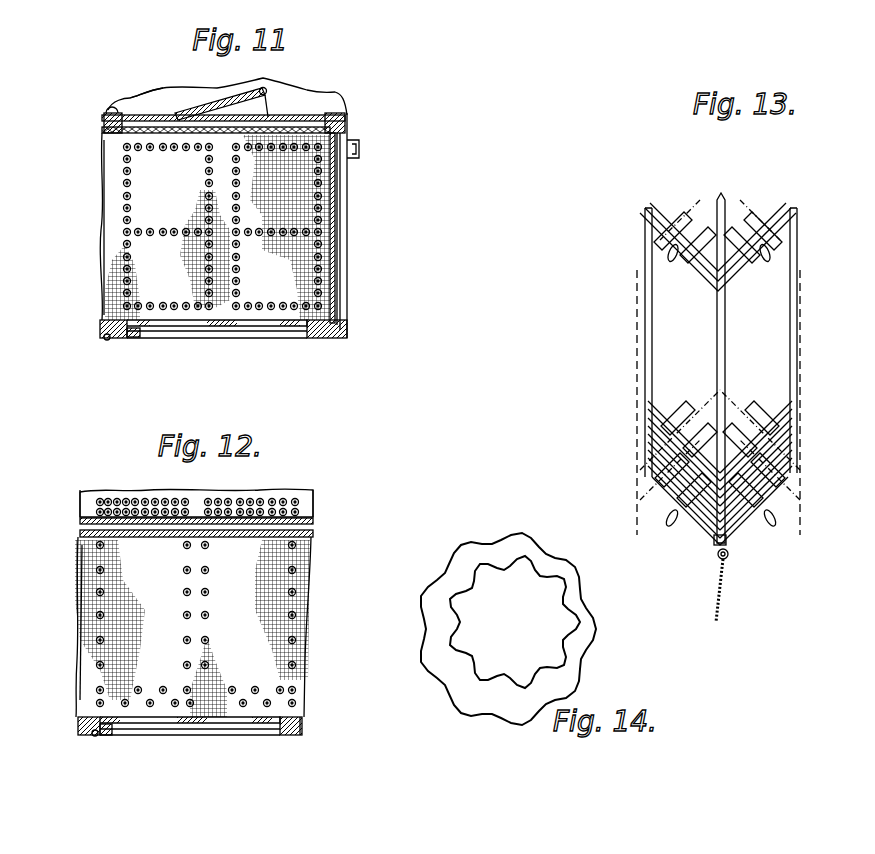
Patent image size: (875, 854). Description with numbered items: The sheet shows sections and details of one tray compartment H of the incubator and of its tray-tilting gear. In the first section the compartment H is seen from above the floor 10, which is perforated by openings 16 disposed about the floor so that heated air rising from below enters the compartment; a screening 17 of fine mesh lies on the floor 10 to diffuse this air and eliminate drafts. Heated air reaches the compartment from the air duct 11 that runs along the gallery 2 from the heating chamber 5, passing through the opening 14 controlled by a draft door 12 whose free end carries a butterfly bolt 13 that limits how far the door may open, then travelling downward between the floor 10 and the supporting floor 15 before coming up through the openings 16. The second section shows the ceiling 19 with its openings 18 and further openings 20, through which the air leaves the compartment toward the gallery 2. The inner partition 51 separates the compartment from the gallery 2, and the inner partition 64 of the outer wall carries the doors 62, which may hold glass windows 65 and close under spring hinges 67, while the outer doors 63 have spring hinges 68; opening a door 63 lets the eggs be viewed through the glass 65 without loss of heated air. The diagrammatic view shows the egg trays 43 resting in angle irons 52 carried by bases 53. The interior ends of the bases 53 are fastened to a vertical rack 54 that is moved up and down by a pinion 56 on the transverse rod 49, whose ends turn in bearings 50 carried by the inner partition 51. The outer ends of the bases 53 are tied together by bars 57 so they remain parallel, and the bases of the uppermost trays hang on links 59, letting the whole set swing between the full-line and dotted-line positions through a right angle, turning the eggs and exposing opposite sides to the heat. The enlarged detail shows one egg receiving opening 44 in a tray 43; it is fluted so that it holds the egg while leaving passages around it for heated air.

In FIG. 12, the gallery 2 is at (313, 504).
In FIG. 11, the heating chamber 5 is at (359, 146).
In FIG. 11, the floor 10 is at (318, 100).
In FIG. 11, the air duct 11 is at (140, 100).
In FIG. 11, the draft door 12 is at (247, 88).
In FIG. 11, the butterfly bolt 13 is at (270, 100).
In FIG. 11, the opening 14 is at (212, 113).
In FIG. 11, the supporting floor 15 is at (104, 124).
In FIG. 11, the openings in the floor 16 is at (123, 181).
In FIG. 11, the screening 17 is at (342, 199).
In FIG. 12, the openings in the ceiling 18 is at (298, 556).
In FIG. 12, the ceiling 19 is at (98, 492).
In FIG. 12, the openings 20 is at (230, 500).
In FIG. 13, the egg tray 43 is at (758, 215).
In FIG. 14, the egg tray 43 is at (582, 628).
In FIG. 14, the egg receiving opening 44 is at (484, 570).
In FIG. 13, the rod 49 is at (730, 554).
In FIG. 13, the bearing 50 is at (672, 526).
In FIG. 11, the inner partition 51 is at (106, 110).
In FIG. 12, the inner partition 51 is at (88, 518).
In FIG. 13, the angle iron 52 is at (796, 205).
In FIG. 13, the base 53 is at (648, 206).
In FIG. 13, the rack 54 is at (716, 353).
In FIG. 13, the pinion 56 is at (722, 570).
In FIG. 13, the bar 57 is at (648, 362).
In FIG. 13, the link 59 is at (672, 262).
In FIG. 11, the door 62 is at (165, 326).
In FIG. 12, the door 62 is at (150, 723).
In FIG. 11, the door 63 is at (225, 331).
In FIG. 12, the door 63 is at (197, 729).
In FIG. 11, the inner partition of the outer wall 64 is at (100, 321).
In FIG. 12, the inner partition of the outer wall 64 is at (78, 721).
In FIG. 11, the glass window 65 is at (285, 326).
In FIG. 12, the glass window 65 is at (260, 723).
In FIG. 11, the spring hinge 67 is at (122, 338).
In FIG. 12, the spring hinge 67 is at (102, 735).
In FIG. 11, the spring hinge 68 is at (104, 338).
In FIG. 12, the spring hinge 68 is at (92, 736).
In FIG. 11, the compartment H is at (103, 211).
In FIG. 12, the compartment H is at (95, 682).